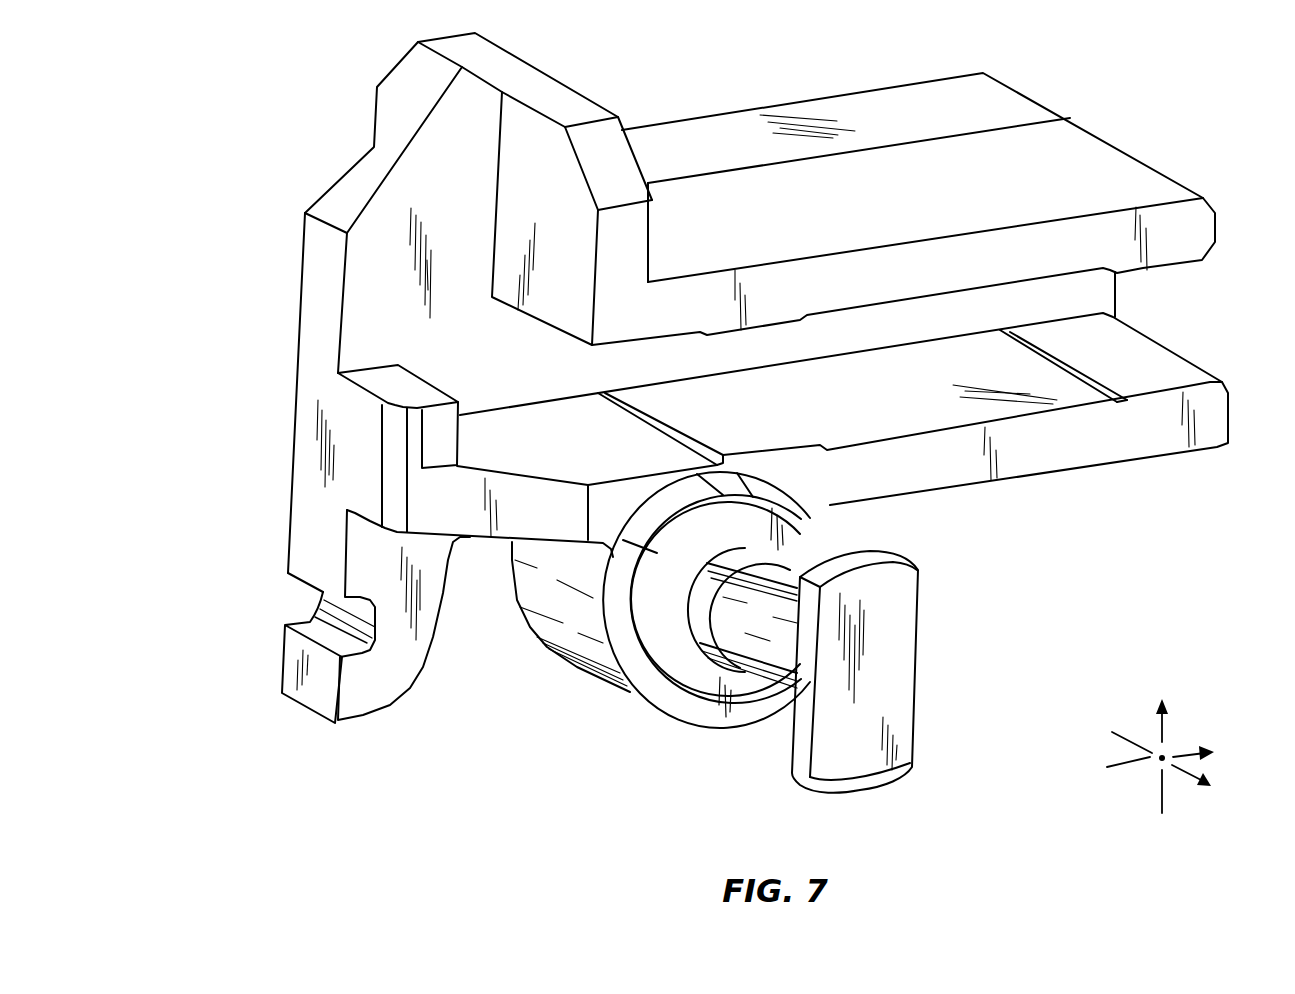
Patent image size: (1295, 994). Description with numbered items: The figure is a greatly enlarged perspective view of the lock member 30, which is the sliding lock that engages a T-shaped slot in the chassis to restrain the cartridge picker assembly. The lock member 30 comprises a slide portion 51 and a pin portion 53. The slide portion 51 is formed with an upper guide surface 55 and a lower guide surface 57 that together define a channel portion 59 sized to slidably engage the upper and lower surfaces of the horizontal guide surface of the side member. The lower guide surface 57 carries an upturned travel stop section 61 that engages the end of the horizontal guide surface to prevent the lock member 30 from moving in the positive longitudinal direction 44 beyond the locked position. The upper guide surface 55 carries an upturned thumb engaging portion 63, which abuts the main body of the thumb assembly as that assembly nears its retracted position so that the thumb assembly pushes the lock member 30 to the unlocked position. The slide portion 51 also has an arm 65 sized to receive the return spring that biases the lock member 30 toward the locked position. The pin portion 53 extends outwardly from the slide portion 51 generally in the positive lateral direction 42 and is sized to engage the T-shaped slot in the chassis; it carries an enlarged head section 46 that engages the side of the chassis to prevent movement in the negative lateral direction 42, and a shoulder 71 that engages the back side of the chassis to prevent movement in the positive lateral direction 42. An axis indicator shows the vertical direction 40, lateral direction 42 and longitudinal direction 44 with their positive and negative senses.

The lock member 30 is at (697, 413).
The upturned thumb engaging portion 63 is at (576, 90).
The upper guide surface 55 is at (1182, 262).
The channel portion 59 is at (1132, 294).
The slide portion 51 is at (1198, 350).
The lower guide surface 57 is at (1083, 345).
The upturned travel stop section 61 is at (460, 447).
The arm 65 is at (283, 660).
The shoulder 71 is at (670, 667).
The pin portion 53 is at (742, 666).
The enlarged head section 46 is at (917, 620).
The lateral direction 42 is at (1127, 740).
The longitudinal direction 44 is at (1120, 762).
The vertical direction 40 is at (1160, 797).